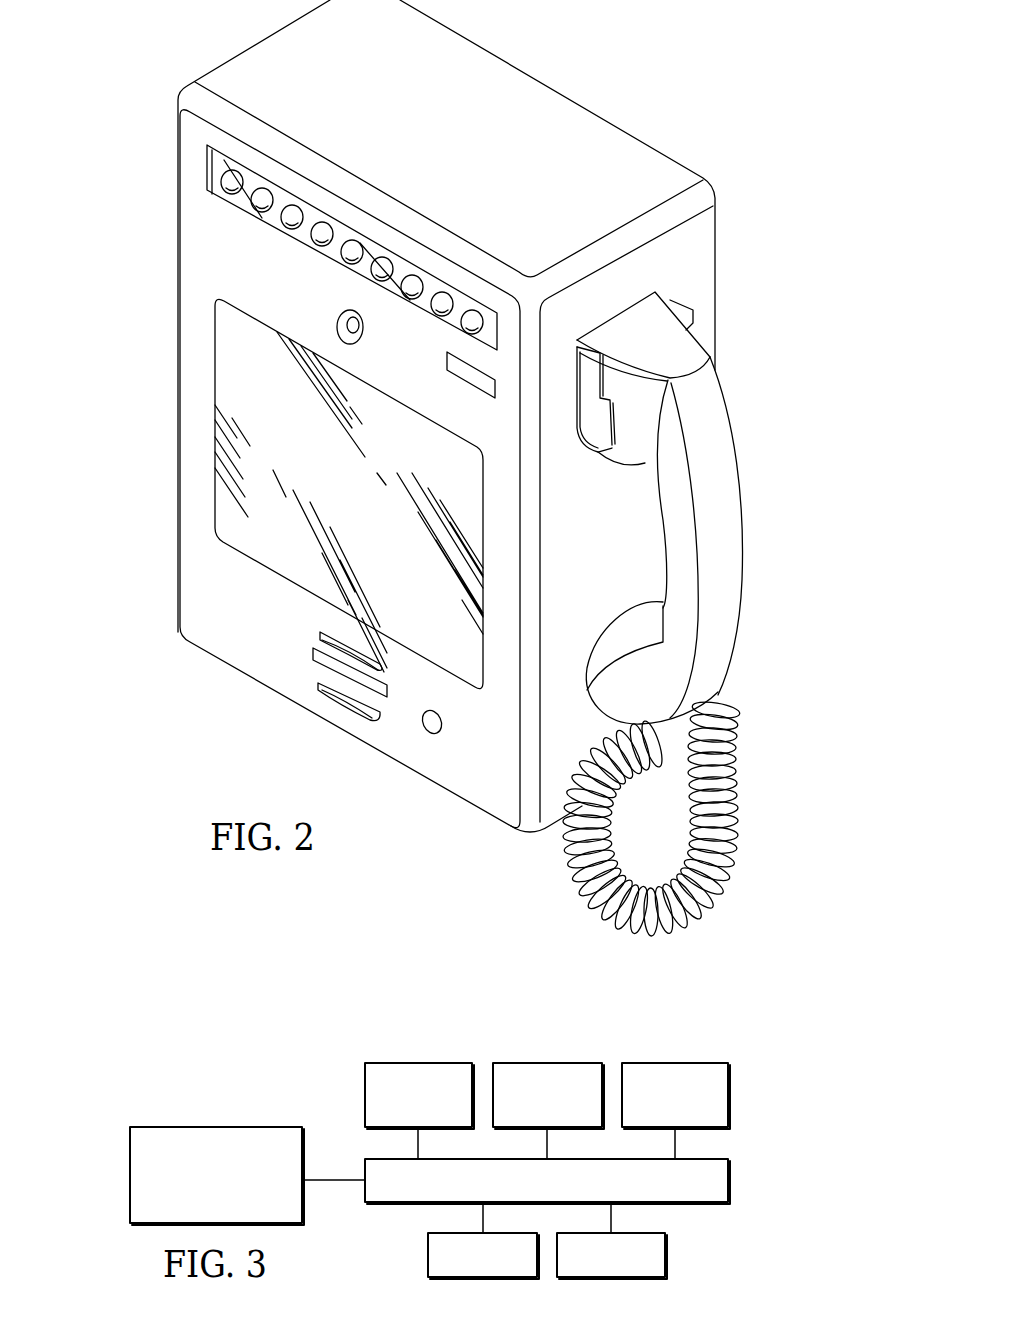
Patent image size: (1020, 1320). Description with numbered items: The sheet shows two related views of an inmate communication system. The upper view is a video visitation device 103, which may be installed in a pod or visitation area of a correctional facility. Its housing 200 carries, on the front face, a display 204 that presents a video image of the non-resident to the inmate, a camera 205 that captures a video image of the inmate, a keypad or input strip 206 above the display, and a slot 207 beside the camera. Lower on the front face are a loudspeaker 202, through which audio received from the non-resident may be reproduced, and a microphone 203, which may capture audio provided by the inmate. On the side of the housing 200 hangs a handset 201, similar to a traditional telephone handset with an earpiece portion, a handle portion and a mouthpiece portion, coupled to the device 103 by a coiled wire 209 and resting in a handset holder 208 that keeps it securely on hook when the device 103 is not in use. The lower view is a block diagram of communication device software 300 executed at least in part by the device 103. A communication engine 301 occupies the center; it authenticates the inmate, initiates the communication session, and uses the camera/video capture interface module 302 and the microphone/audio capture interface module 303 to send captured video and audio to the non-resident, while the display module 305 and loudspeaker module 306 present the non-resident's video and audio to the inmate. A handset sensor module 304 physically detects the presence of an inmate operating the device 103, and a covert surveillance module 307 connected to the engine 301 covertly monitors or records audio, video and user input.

In FIG. 2, the video visitation device 103 is at (620, 70).
In FIG. 2, the housing 200 is at (178, 366).
In FIG. 2, the handset 201 is at (742, 548).
In FIG. 2, the loudspeaker 202 is at (315, 668).
In FIG. 2, the microphone 203 is at (428, 738).
In FIG. 2, the display 204 is at (230, 500).
In FIG. 2, the camera 205 is at (338, 320).
In FIG. 2, the keypad 206 is at (207, 168).
In FIG. 2, the card slot 207 is at (462, 390).
In FIG. 2, the handset holder 208 is at (606, 462).
In FIG. 2, the wire 209 is at (732, 818).
In FIG. 3, the communication device software 300 is at (268, 1020).
In FIG. 3, the communication engine 301 is at (728, 1190).
In FIG. 3, the camera/video capture interface module 302 is at (428, 1258).
In FIG. 3, the microphone/audio capture interface module 303 is at (665, 1255).
In FIG. 3, the handset sensor module 304 is at (408, 1063).
In FIG. 3, the display module 305 is at (537, 1063).
In FIG. 3, the loudspeaker module 306 is at (693, 1063).
In FIG. 3, the covert surveillance module 307 is at (218, 1127).